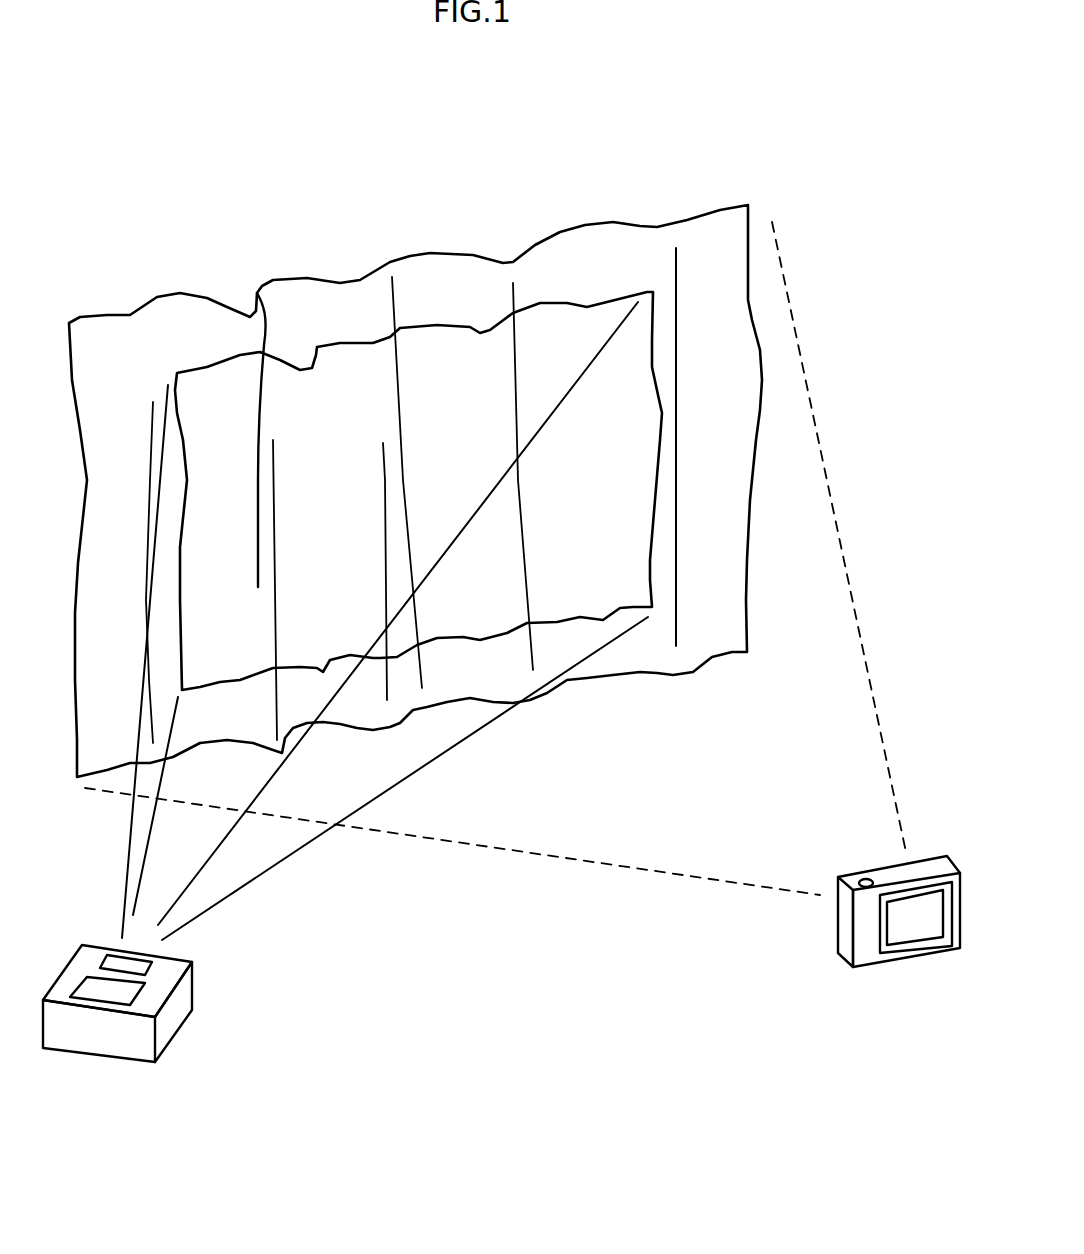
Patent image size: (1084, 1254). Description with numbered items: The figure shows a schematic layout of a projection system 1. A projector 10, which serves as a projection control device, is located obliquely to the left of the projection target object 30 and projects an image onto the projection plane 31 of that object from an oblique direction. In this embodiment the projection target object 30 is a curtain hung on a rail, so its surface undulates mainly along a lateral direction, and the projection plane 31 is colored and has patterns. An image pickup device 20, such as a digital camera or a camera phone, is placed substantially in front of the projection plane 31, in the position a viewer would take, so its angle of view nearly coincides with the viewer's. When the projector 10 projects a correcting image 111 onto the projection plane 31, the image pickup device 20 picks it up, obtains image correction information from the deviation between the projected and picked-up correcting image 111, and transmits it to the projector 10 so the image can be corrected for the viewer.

The projection system 1 is at (792, 131).
The projector 10 is at (175, 1037).
The image pickup device 20 is at (885, 962).
The projection target object 30 is at (307, 277).
The projection plane 31 is at (585, 270).
The correcting image 111 is at (207, 365).